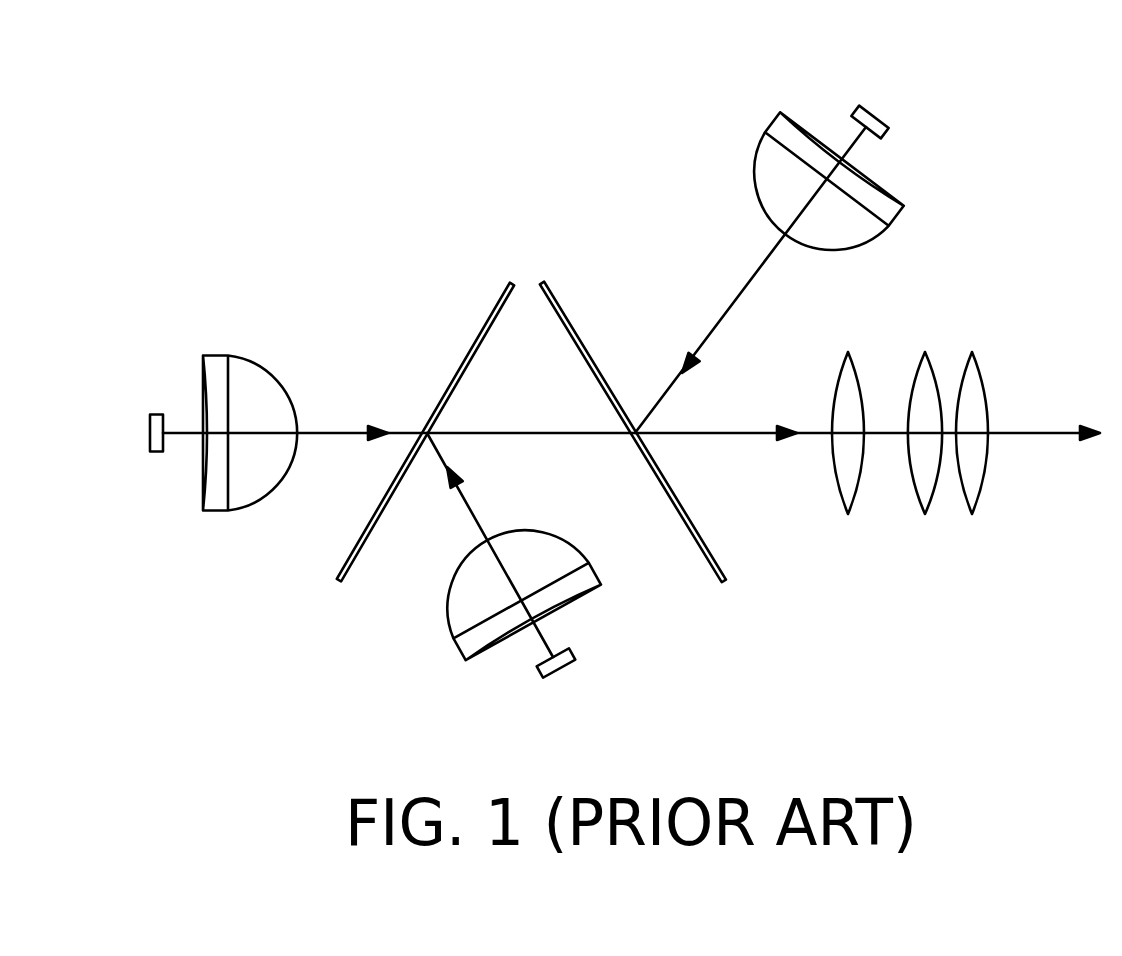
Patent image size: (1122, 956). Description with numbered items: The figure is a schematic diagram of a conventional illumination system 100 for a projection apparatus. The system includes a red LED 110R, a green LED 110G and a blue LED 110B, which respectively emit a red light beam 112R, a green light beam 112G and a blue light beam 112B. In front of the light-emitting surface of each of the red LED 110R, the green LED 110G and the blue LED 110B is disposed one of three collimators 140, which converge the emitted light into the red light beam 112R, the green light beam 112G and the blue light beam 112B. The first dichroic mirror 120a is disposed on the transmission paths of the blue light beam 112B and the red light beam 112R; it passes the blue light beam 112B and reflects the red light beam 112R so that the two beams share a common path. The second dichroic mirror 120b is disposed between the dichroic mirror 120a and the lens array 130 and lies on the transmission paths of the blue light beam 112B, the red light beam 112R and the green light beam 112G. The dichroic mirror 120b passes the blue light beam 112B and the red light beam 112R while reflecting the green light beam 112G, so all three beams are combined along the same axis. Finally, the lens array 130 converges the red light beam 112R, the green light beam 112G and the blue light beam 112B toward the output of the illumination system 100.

The conventional illumination system 100 is at (1038, 717).
The blue light emitting diode 110B is at (153, 455).
The green light emitting diode 110G is at (866, 103).
The red light emitting diode 110R is at (585, 648).
The blue light beam 112B is at (357, 427).
The green light beam 112G is at (762, 263).
The red light beam 112R is at (463, 493).
The dichroic mirror 120a is at (490, 323).
The dichroic mirror 120b is at (562, 312).
The lens array 130 is at (905, 327).
The collimator 140 is at (262, 372).